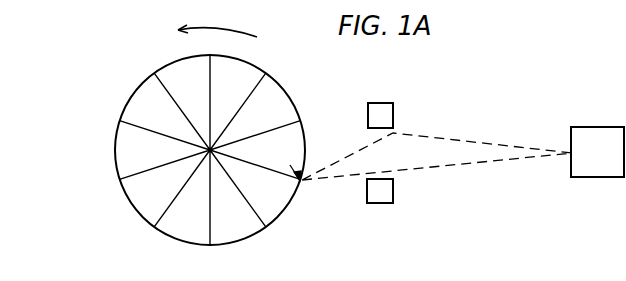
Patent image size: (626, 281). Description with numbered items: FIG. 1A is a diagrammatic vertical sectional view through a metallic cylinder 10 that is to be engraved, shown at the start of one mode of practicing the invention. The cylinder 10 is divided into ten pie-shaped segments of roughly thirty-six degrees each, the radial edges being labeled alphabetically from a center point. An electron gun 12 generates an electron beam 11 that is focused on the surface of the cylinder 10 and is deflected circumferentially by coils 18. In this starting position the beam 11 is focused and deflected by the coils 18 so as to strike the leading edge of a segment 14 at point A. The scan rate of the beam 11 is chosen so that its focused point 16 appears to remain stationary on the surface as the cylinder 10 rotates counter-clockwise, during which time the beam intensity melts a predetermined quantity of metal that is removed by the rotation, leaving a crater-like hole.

The metallic cylinder 10 is at (214, 151).
The electron beam 11 is at (452, 167).
The electron gun 12 is at (614, 164).
The segment 14 is at (288, 205).
The focused point 16 is at (285, 166).
The coils 18 is at (380, 103).